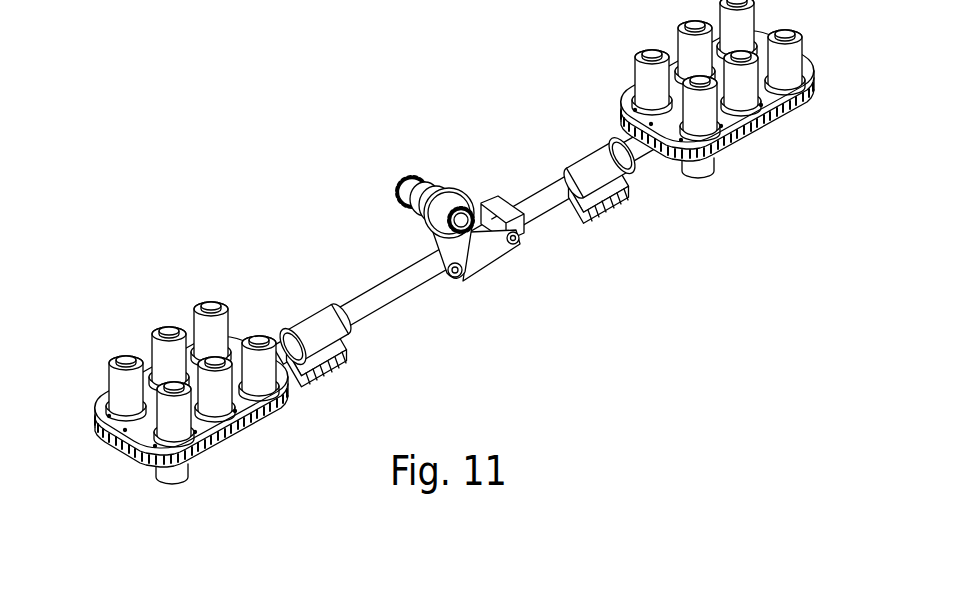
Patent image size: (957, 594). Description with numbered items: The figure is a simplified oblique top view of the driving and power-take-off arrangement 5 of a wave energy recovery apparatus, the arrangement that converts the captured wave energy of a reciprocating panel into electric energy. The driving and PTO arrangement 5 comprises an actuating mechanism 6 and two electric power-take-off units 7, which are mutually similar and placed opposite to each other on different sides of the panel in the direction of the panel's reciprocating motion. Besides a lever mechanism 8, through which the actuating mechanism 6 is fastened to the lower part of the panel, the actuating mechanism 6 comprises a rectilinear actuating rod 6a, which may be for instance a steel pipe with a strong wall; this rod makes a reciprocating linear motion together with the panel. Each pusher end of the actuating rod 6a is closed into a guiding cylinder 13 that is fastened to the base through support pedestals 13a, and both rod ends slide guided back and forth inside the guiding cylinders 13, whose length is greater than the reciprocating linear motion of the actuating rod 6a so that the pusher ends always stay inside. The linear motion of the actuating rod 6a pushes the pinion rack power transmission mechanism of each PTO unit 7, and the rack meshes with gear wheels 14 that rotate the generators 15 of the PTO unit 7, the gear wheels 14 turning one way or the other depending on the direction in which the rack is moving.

The driving and power-take-off arrangement 5 is at (336, 74).
The actuating mechanism 6 is at (538, 136).
The actuating rod 6a is at (376, 290).
The power-take-off unit 7 is at (783, 176).
The lever mechanism 8 is at (465, 171).
The guiding cylinder 13 is at (300, 318).
The support pedestal 13a is at (604, 222).
The gear wheel 14 is at (673, 162).
The generator 15 is at (214, 306).